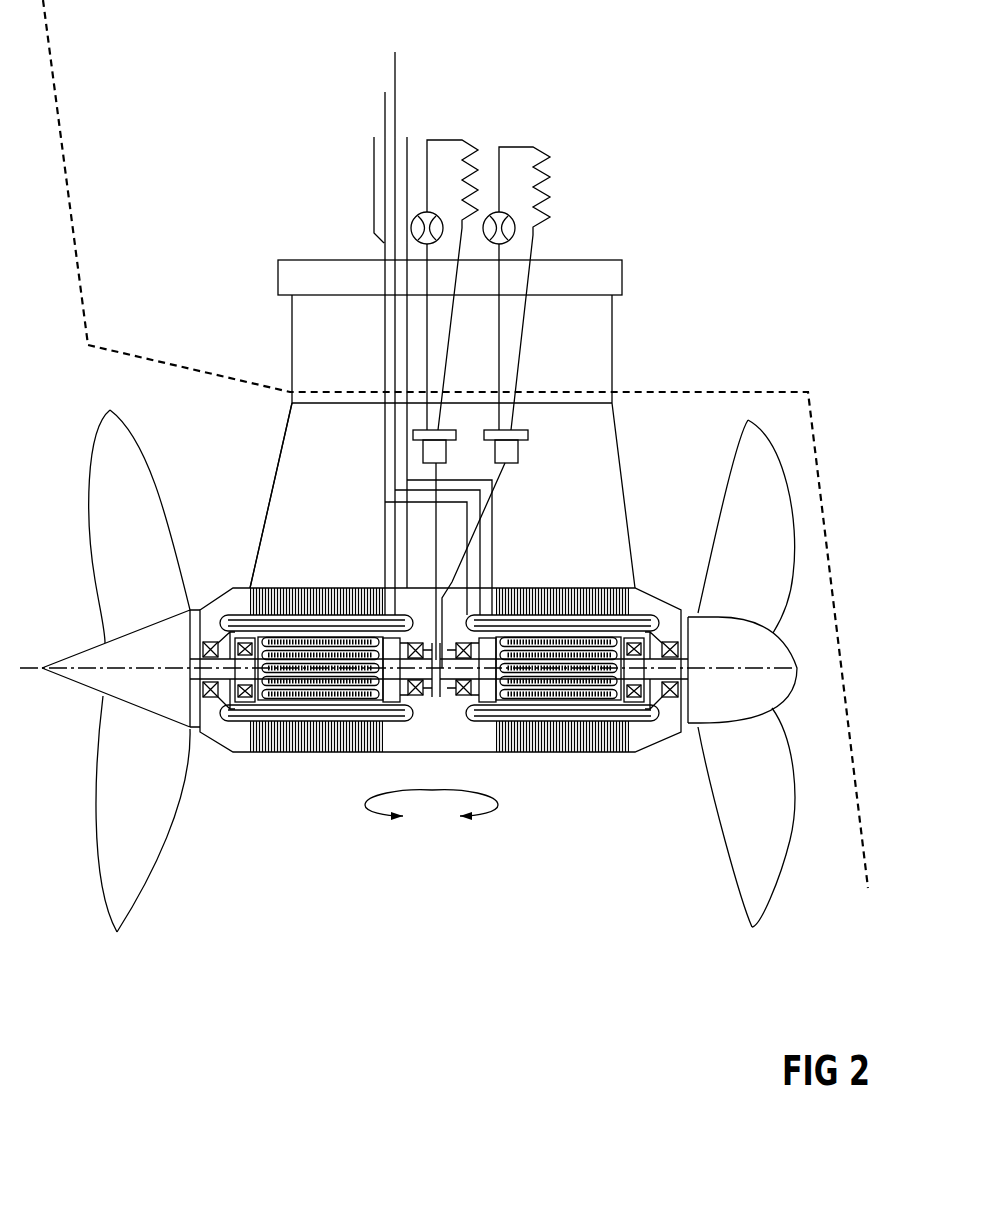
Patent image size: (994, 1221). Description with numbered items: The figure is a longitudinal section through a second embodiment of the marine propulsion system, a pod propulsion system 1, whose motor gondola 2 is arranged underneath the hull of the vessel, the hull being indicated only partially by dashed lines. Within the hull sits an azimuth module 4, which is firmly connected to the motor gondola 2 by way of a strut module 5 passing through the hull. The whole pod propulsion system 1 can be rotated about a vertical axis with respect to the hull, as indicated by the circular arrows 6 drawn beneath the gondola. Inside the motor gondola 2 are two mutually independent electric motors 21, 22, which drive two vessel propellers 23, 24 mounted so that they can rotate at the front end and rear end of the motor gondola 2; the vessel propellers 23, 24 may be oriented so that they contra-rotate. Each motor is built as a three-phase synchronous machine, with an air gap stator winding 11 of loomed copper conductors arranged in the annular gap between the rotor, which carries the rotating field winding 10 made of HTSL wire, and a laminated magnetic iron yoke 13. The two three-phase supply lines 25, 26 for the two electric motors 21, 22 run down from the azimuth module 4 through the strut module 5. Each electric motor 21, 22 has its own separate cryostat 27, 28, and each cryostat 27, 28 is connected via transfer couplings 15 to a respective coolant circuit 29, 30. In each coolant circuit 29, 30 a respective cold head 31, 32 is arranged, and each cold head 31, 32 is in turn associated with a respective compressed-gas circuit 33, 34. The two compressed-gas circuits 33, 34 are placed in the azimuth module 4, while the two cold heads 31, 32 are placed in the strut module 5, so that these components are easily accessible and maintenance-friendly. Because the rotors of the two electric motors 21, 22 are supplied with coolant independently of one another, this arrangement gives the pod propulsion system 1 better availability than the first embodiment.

The pod propulsion system 1 is at (665, 468).
The motor gondola 2 is at (652, 756).
The azimuth module 4 is at (622, 348).
The strut module 5 is at (253, 471).
The circular arrows 6 is at (433, 790).
The rotating field winding 10 is at (283, 690).
The stator winding 11 is at (238, 622).
The laminated magnetic iron yoke 13 is at (320, 607).
The transfer couplings 15 is at (476, 705).
The first electric motor 21 is at (302, 752).
The second electric motor 22 is at (572, 745).
The first vessel propeller 23 is at (148, 901).
The second vessel propeller 24 is at (785, 882).
The first three-phase supply line 25 is at (385, 520).
The second three-phase supply line 26 is at (495, 527).
The first cryostat 27 is at (378, 708).
The second cryostat 28 is at (500, 610).
The first coolant circuit 29 is at (408, 507).
The second coolant circuit 30 is at (500, 478).
The first cold head 31 is at (420, 455).
The second cold head 32 is at (522, 452).
The first compressed-gas circuit 33 is at (445, 138).
The second compressed-gas circuit 34 is at (515, 145).